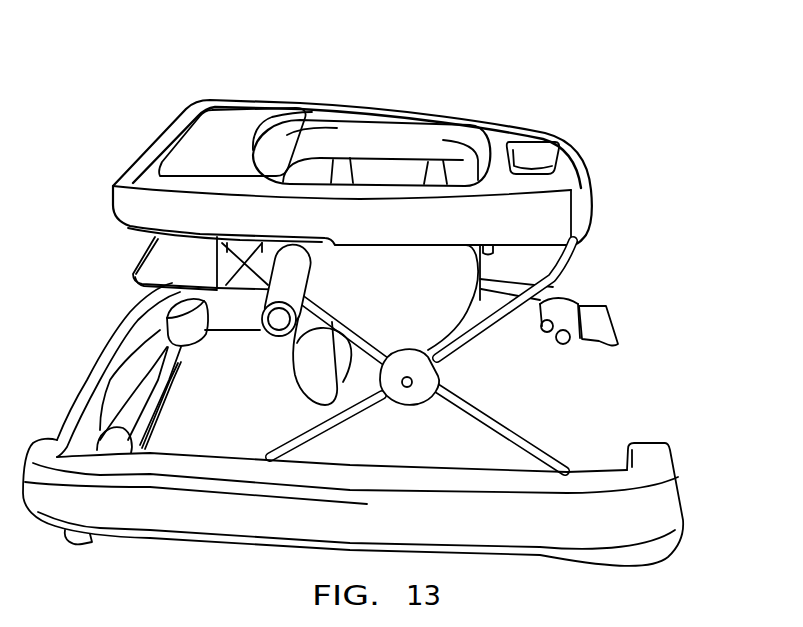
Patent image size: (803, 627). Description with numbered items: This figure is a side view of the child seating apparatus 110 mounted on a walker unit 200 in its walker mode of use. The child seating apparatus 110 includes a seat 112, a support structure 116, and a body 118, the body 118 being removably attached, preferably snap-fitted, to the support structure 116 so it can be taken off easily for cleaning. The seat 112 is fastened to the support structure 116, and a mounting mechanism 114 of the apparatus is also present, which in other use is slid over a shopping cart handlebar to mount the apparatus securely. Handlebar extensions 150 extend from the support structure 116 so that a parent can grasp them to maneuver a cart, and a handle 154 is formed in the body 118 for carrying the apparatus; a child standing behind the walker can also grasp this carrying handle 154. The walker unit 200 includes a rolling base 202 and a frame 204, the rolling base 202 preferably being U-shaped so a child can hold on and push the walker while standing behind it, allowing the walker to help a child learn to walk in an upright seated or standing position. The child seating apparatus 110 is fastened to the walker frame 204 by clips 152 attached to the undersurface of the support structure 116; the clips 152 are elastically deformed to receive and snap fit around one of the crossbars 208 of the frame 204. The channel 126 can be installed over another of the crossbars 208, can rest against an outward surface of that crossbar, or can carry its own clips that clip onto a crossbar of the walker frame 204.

The child seating apparatus 110 is at (177, 95).
The seat 112 is at (446, 289).
The mounting mechanism 114 is at (128, 291).
The support structure 116 is at (257, 240).
The body 118 is at (542, 236).
The channel 126 is at (160, 251).
The handlebar extensions 150 is at (290, 277).
The clips 152 is at (580, 240).
The handle 154 is at (544, 160).
The walker unit 200 is at (676, 395).
The rolling base 202 is at (660, 497).
The frame 204 is at (464, 348).
The crossbars 208 is at (570, 271).